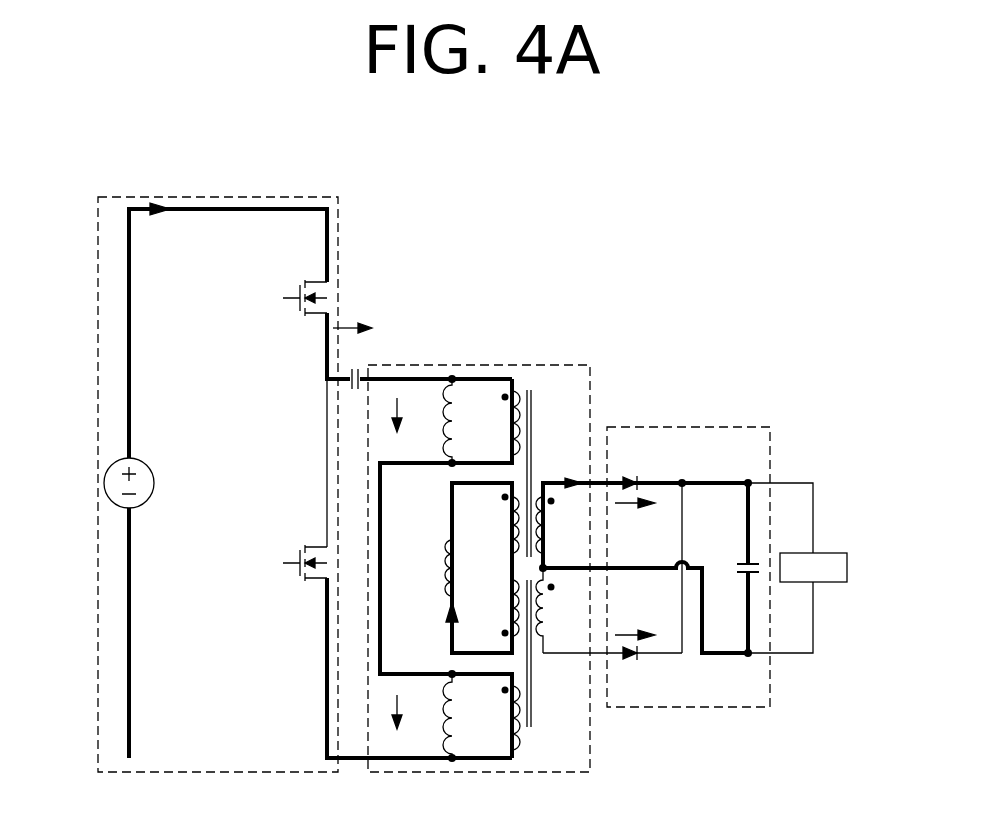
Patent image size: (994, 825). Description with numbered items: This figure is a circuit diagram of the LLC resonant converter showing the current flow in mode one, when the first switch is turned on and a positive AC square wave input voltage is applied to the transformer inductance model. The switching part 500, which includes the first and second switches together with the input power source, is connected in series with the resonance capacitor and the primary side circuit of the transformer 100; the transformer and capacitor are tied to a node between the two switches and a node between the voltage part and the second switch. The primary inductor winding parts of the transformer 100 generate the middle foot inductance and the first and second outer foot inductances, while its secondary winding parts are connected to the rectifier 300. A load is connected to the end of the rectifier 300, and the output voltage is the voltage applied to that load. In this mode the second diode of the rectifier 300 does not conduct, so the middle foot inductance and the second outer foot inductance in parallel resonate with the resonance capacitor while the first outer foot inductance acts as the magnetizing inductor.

The switching part 500 is at (243, 197).
The transformer 100 is at (483, 365).
The rectifier 300 is at (701, 427).